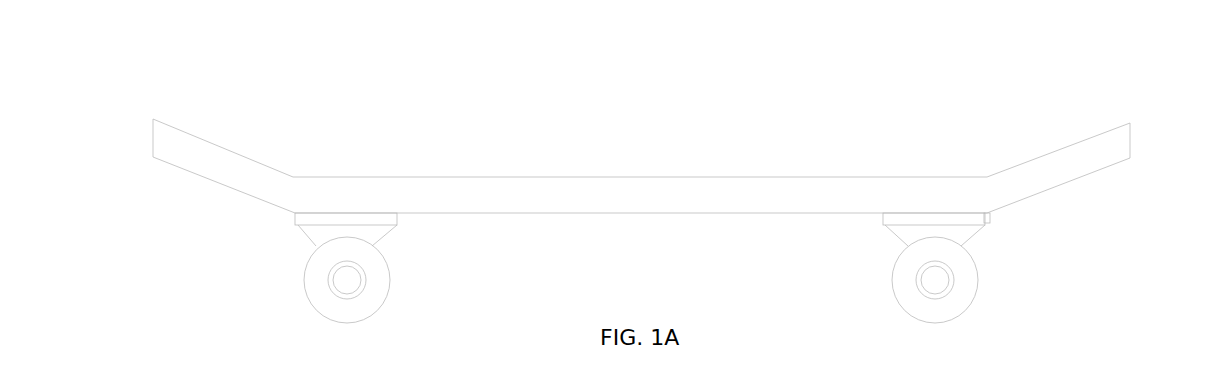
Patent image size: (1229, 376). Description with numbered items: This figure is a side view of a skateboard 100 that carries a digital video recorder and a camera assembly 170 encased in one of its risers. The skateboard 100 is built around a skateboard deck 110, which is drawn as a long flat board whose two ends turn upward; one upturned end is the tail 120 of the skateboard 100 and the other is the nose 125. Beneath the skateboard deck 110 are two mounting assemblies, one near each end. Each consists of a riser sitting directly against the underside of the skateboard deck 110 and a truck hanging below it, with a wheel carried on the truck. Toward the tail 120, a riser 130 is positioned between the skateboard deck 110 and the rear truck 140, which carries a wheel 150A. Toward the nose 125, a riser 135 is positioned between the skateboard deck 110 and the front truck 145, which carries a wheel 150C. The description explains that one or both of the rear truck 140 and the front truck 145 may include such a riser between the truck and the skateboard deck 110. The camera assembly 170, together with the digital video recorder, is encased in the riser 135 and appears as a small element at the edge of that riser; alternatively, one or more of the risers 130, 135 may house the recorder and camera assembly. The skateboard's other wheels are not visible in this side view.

The skateboard 100 is at (634, 184).
The skateboard deck 110 is at (413, 195).
The tail 120 is at (176, 145).
The nose 125 is at (1085, 157).
The riser 130 is at (307, 218).
The riser 135 is at (893, 220).
The rear truck 140 is at (322, 237).
The front truck 145 is at (912, 230).
The wheel 150A is at (380, 280).
The wheel 150C is at (958, 295).
The camera assembly 170 is at (990, 220).